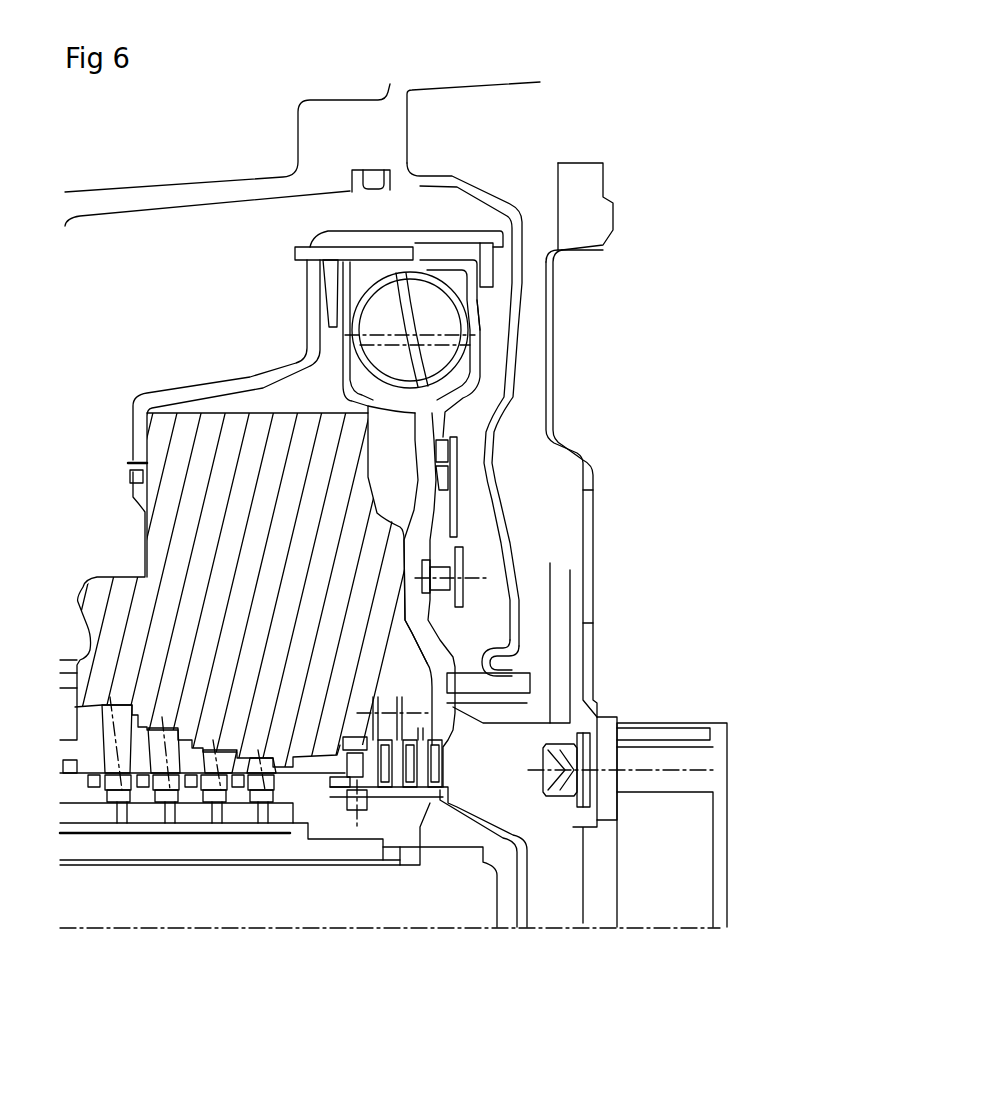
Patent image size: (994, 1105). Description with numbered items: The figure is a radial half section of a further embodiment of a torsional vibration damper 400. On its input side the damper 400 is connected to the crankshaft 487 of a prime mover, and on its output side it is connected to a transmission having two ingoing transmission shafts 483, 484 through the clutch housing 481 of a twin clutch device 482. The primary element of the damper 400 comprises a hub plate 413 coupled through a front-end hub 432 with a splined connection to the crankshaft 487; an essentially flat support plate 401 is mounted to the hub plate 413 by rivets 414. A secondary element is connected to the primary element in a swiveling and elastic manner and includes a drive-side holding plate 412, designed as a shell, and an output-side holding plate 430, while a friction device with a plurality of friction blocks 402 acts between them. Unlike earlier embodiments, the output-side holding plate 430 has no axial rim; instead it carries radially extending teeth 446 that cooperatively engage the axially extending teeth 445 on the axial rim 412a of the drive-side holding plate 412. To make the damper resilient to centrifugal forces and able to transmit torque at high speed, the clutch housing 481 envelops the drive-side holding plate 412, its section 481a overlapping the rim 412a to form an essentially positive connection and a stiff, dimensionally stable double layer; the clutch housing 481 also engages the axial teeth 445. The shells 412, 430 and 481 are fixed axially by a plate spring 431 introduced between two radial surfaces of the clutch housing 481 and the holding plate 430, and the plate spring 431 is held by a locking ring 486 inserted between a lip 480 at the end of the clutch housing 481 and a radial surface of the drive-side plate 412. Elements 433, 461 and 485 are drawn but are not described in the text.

The torsional vibration damper 400 is at (549, 148).
The support plate 401 is at (455, 470).
The friction blocks 402 is at (440, 452).
The drive-side holding plate 412 is at (478, 320).
The axial rim of drive-side holding plate 412a is at (388, 254).
The hub plate 413 is at (430, 507).
The rivets 414 is at (440, 578).
The output-side holding plate 430 is at (348, 310).
The plate spring 431 is at (327, 247).
The front-end hub 432 is at (488, 682).
The support bracket 433 is at (410, 250).
The axial teeth 445 is at (315, 254).
The radial teeth 446 is at (347, 254).
The bearing element 461 is at (443, 437).
The lip 480 is at (497, 232).
The clutch housing 481 is at (250, 377).
The section of clutch housing 481a is at (363, 241).
The twin clutch device 482 is at (288, 560).
The transmission shaft 483 is at (168, 847).
The transmission shaft 484 is at (332, 903).
The housing wall 485 is at (488, 698).
The locking ring 486 is at (487, 269).
The crankshaft 487 is at (663, 850).